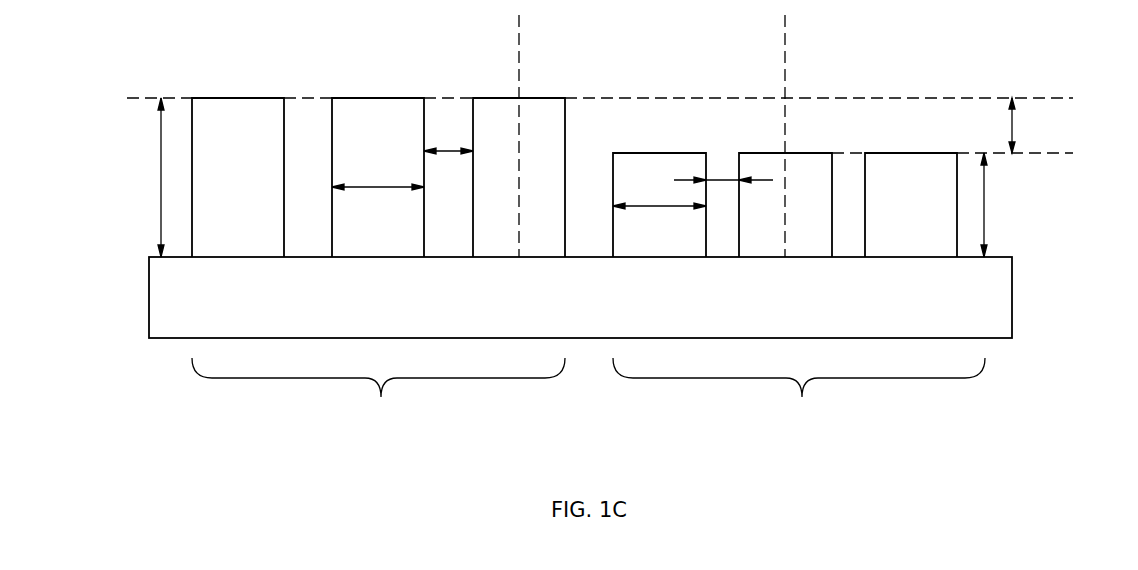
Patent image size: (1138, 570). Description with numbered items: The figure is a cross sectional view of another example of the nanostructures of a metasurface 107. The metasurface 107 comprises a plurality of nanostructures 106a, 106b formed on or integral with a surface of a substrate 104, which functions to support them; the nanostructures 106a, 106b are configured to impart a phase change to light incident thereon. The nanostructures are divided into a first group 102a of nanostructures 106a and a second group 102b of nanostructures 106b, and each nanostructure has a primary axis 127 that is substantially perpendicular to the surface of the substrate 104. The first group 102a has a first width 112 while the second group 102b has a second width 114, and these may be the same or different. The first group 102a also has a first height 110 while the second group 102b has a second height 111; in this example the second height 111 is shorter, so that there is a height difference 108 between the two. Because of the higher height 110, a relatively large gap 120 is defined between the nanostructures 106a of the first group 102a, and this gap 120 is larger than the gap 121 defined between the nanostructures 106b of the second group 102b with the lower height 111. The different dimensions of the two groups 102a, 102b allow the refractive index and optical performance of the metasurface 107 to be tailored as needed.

The first group 102a is at (378, 392).
The second group 102b is at (799, 392).
The substrate 104 is at (1013, 305).
The nanostructures 106a is at (238, 98).
The nanostructures 106b is at (985, 183).
The metasurface 107 is at (889, 72).
The height difference 108 is at (1013, 125).
The first height 110 is at (160, 176).
The second height 111 is at (985, 208).
The first width 112 is at (383, 187).
The second width 114 is at (658, 206).
The gap 120 is at (446, 151).
The gap 121 is at (722, 180).
The primary axis 127 is at (519, 63).